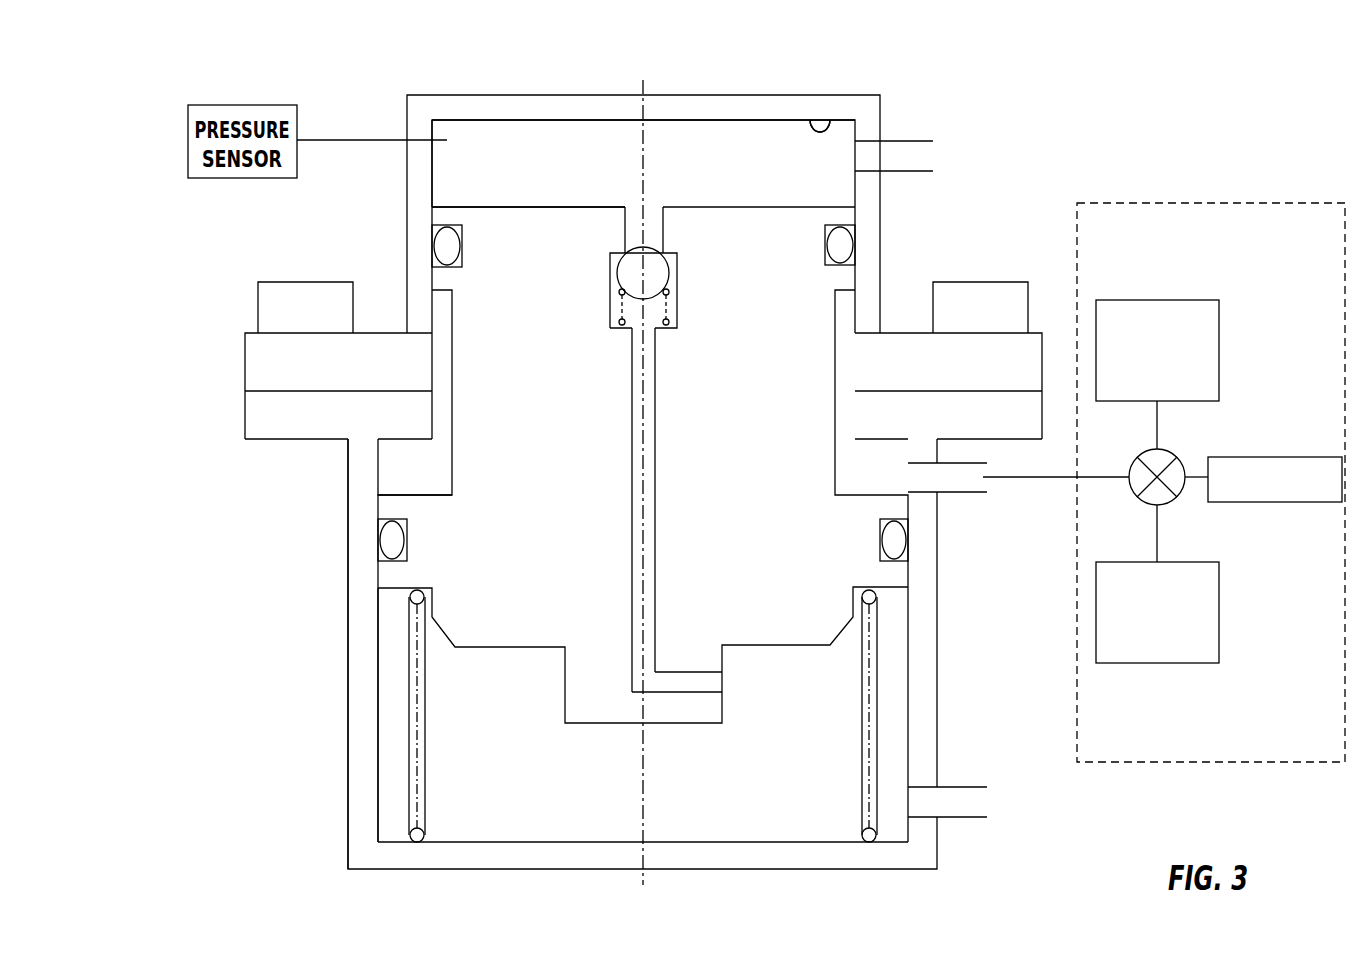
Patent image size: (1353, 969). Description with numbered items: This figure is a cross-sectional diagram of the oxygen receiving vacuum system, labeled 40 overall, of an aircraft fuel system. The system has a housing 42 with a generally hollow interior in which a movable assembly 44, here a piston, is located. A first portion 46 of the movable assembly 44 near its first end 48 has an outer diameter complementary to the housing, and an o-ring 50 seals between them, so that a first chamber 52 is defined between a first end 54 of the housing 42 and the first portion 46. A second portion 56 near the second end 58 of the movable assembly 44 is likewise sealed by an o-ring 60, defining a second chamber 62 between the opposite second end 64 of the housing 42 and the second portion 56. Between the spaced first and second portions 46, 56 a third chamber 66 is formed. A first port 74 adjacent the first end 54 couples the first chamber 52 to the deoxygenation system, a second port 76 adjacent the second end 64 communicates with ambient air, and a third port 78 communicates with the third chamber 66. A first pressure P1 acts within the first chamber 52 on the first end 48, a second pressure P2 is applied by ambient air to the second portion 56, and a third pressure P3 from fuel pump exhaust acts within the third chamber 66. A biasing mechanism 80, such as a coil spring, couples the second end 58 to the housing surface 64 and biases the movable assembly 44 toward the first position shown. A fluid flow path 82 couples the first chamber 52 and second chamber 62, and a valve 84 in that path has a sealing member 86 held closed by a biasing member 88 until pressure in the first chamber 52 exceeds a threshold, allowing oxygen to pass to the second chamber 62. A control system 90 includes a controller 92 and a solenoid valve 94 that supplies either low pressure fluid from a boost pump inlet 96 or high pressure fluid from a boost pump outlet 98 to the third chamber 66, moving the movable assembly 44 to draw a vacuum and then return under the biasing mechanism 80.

The pressure regulating valve assembly 40 is at (150, 88).
The housing 42 is at (752, 112).
The movable assembly 44 is at (464, 545).
The first portion 46 is at (497, 262).
The first end 48 is at (535, 200).
The o-ring 50 is at (843, 240).
The first chamber 52 is at (575, 172).
The first end of the housing 54 is at (822, 128).
The second portion 56 is at (853, 548).
The second end 58 is at (585, 725).
The o-ring 60 is at (385, 543).
The second chamber 62 is at (453, 763).
The second end of the housing 64 is at (713, 832).
The third chamber 66 is at (413, 463).
The first port 74 is at (903, 155).
The second port 76 is at (953, 805).
The third port 78 is at (937, 478).
The biasing mechanism 80 is at (868, 700).
The fluid flow path 82 is at (632, 445).
The valve 84 is at (697, 282).
The sealing member 86 is at (647, 265).
The biasing member 88 is at (620, 294).
The control system 90 is at (1158, 190).
The controller 92 is at (1250, 462).
The solenoid valve 94 is at (1165, 505).
The boost pump inlet 96 is at (1222, 330).
The boost pump outlet 98 is at (1222, 620).
The first pressure P1 is at (733, 200).
The second pressure P2 is at (782, 655).
The third pressure P3 is at (843, 488).